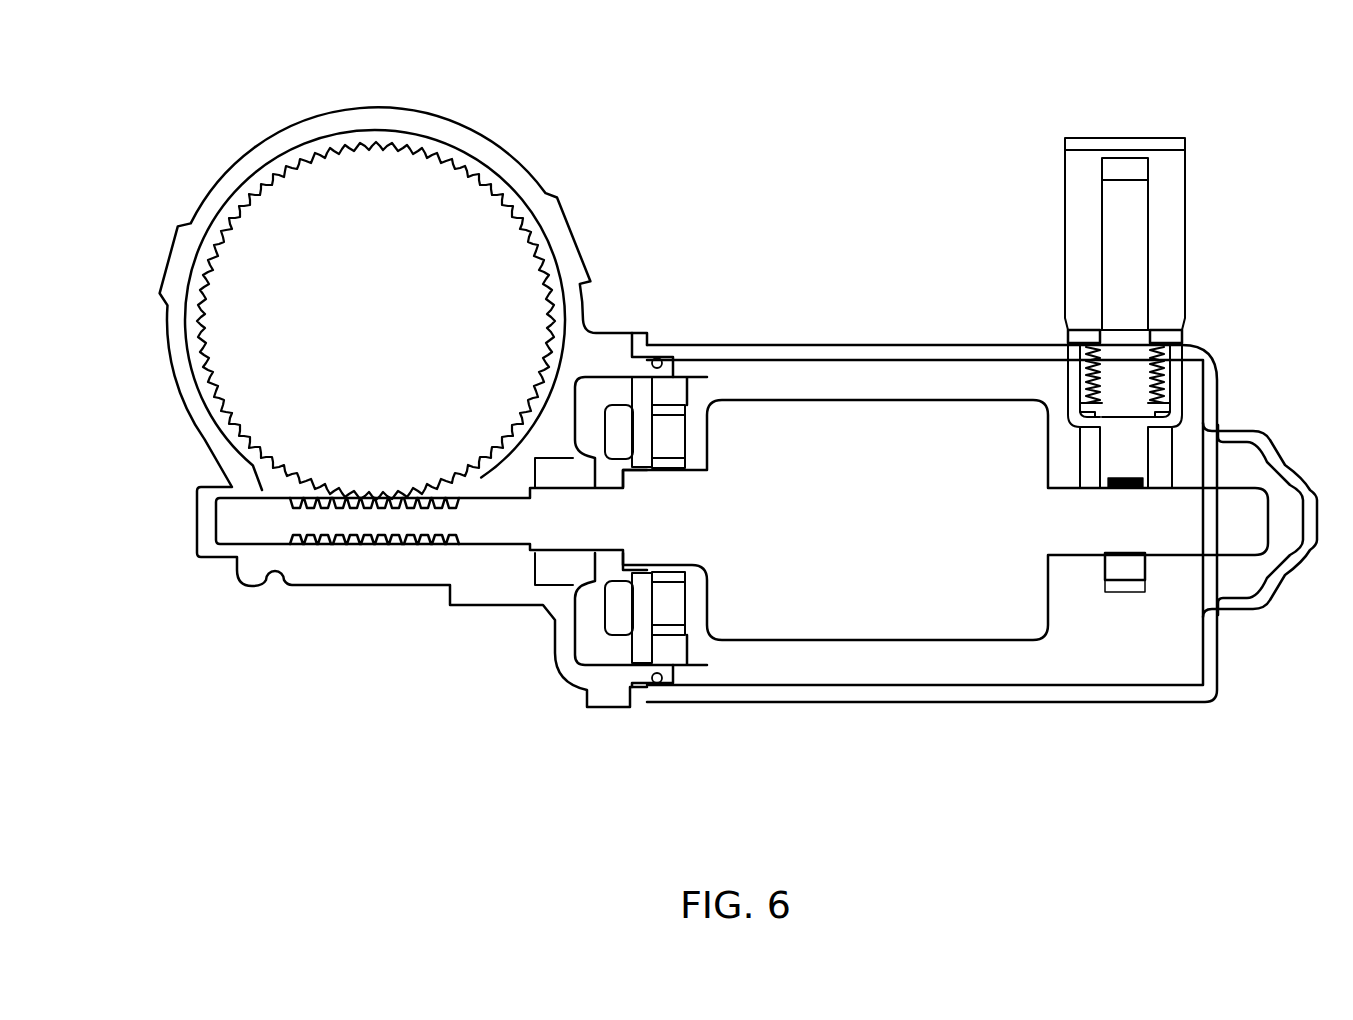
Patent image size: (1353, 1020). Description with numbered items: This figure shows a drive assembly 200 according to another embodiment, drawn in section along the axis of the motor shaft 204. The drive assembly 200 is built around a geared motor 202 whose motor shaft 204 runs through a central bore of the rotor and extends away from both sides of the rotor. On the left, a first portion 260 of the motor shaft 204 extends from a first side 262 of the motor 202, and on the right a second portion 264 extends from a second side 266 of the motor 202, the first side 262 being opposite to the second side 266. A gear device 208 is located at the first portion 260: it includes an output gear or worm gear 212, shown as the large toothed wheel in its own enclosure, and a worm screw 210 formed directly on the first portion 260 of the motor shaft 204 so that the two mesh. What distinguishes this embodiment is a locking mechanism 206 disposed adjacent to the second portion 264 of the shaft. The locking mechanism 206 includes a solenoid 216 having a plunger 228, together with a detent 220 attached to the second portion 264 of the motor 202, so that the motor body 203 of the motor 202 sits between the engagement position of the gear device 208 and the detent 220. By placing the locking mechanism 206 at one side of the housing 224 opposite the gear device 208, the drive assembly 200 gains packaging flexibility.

The drive assembly 200 is at (1005, 62).
The geared motor 202 is at (859, 394).
The motor body 203 is at (925, 430).
The motor shaft 204 is at (468, 545).
The locking mechanism 206 is at (1233, 390).
The gear device 208 is at (163, 386).
The worm screw 210 is at (330, 530).
The worm gear 212 is at (428, 195).
The solenoid 216 is at (1062, 248).
The detent 220 is at (1126, 577).
The housing 224 is at (1105, 704).
The plunger 228 is at (1128, 440).
The first portion 260 is at (497, 532).
The first side 262 is at (695, 642).
The second portion 264 is at (1196, 535).
The second side 266 is at (1057, 622).